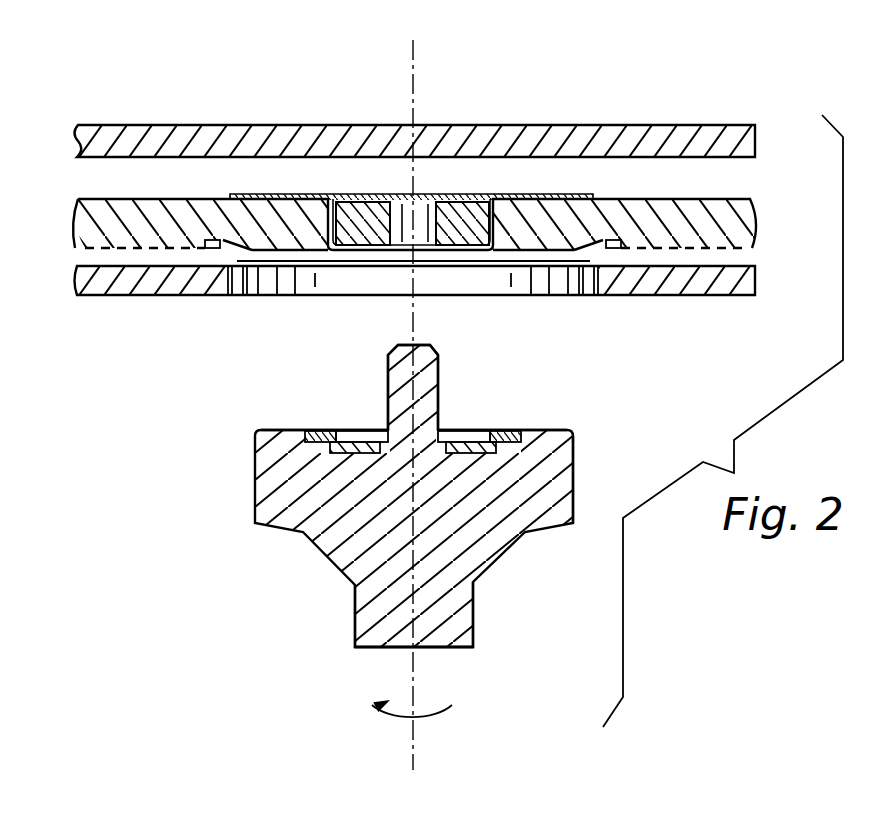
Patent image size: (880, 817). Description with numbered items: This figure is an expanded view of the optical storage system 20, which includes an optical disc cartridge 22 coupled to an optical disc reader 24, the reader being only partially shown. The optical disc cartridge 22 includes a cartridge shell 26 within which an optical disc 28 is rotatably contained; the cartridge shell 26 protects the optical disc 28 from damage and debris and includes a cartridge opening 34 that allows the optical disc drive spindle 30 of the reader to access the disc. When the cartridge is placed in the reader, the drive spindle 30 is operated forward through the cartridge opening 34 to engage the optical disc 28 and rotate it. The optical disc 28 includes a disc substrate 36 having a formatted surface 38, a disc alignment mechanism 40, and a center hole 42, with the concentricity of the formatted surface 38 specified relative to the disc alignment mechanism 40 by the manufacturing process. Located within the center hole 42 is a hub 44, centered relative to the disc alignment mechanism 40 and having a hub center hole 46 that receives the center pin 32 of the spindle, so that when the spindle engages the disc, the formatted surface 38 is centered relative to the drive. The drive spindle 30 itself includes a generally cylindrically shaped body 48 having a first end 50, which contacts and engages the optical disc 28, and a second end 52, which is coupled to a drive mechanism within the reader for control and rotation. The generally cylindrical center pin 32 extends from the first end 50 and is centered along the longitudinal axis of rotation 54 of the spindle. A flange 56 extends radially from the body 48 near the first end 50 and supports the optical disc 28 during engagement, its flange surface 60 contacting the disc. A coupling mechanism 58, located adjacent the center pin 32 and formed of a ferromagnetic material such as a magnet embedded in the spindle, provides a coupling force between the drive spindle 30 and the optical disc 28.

The optical storage system 20 is at (208, 88).
The optical disc cartridge 22 is at (645, 99).
The optical disc reader 24 is at (303, 577).
The cartridge shell 26 is at (511, 125).
The optical disc 28 is at (742, 195).
The optical disc drive spindle 30 is at (508, 560).
The center pin 32 is at (388, 385).
The cartridge opening 34 is at (289, 286).
The disc substrate 36 is at (728, 219).
The formatted surface 38 is at (108, 248).
The disc alignment mechanism 40 is at (230, 263).
The center hole 42 is at (353, 247).
The hub 44 is at (304, 194).
The hub center hole 46 is at (425, 240).
The generally cylindrically shaped body 48 is at (453, 615).
The first end 50 is at (507, 440).
The second end 52 is at (377, 650).
The longitudinal axis of rotation 54 is at (415, 680).
The flange 56 is at (575, 478).
The coupling mechanism 58 is at (334, 432).
The flange surface 60 is at (553, 428).